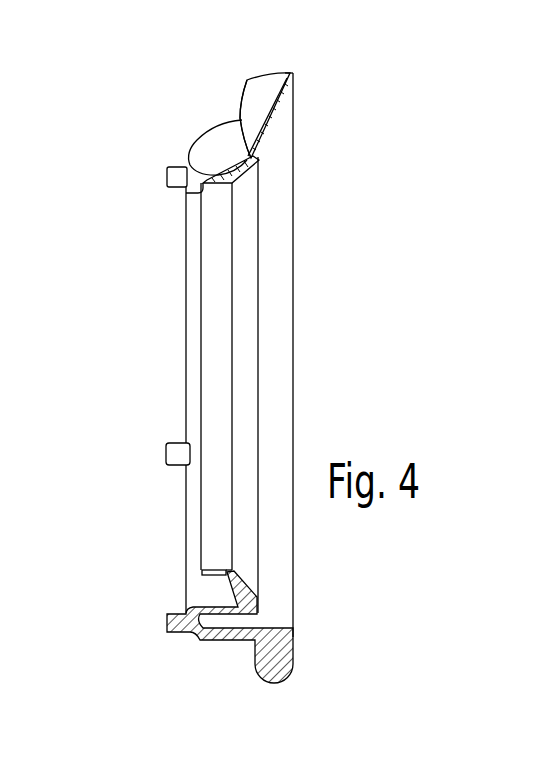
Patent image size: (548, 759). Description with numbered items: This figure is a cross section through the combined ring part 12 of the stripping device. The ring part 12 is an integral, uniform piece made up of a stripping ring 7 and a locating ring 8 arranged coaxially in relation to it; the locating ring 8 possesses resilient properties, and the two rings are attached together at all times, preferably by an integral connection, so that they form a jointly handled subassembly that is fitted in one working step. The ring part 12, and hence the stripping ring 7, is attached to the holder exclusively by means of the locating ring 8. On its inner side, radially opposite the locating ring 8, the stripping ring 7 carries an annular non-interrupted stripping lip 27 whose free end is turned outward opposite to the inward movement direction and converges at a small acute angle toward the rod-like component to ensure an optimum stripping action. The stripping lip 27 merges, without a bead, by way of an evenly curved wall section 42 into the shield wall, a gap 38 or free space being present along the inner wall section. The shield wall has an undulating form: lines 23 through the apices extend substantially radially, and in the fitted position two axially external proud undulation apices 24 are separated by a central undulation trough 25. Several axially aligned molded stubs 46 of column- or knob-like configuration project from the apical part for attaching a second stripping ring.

The ring part 12 is at (303, 351).
The stripping ring 7 is at (222, 584).
The locating ring 8 is at (273, 587).
The lines through the apices 23 is at (235, 98).
The undulation apices 24 is at (258, 93).
The undulation trough 25 is at (293, 98).
The stripping lip 27 is at (186, 193).
The gap 38 is at (210, 157).
The evenly curved wall section 42 is at (263, 150).
The molded stubs 46 is at (172, 453).